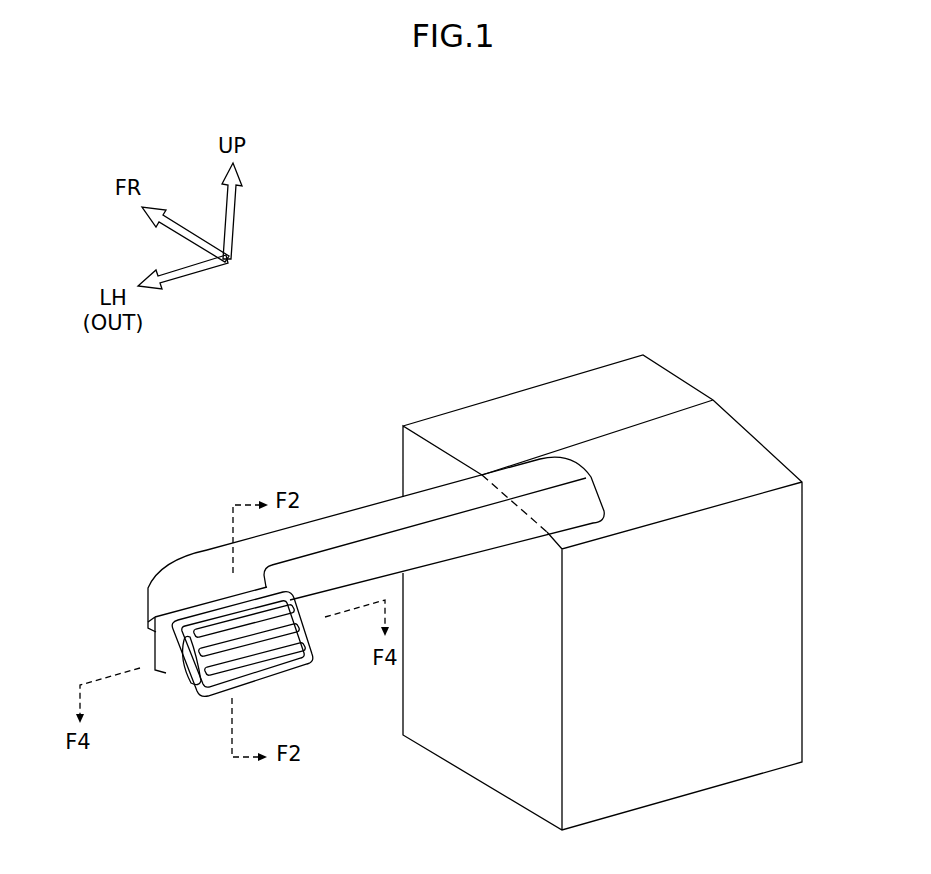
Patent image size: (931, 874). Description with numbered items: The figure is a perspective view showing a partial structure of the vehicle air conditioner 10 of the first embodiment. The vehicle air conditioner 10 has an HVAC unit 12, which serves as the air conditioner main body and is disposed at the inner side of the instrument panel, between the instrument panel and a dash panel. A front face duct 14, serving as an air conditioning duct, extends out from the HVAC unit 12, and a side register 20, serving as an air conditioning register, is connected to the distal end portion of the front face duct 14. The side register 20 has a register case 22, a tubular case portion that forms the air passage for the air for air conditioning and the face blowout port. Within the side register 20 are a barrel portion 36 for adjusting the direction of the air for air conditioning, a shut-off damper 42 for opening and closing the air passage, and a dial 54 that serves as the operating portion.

The vehicle air conditioner 10 is at (488, 320).
The HVAC unit 12 is at (695, 758).
The front face duct 14 is at (365, 517).
The side register 20 is at (296, 688).
The register case 22 is at (200, 700).
The barrel portion 36 is at (245, 673).
The shut-off damper 42 is at (148, 632).
The dial 54 is at (187, 660).